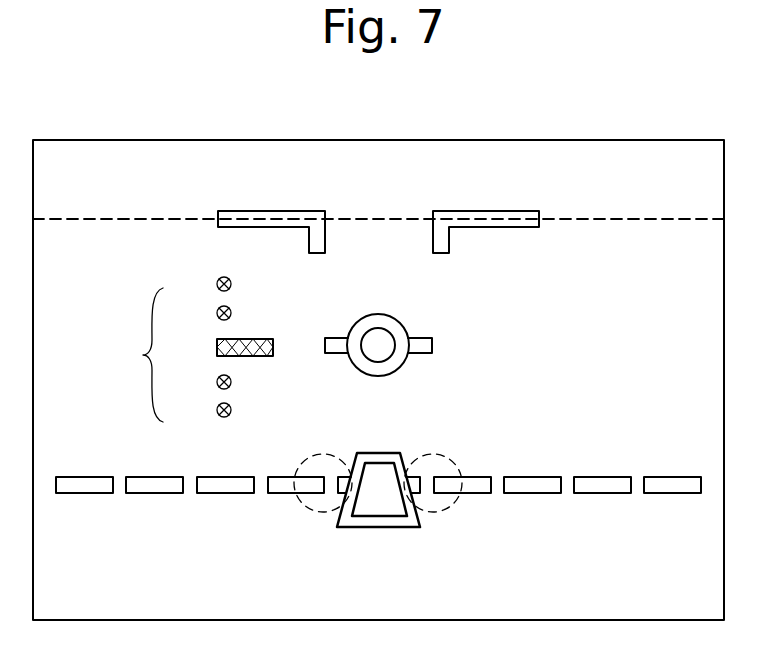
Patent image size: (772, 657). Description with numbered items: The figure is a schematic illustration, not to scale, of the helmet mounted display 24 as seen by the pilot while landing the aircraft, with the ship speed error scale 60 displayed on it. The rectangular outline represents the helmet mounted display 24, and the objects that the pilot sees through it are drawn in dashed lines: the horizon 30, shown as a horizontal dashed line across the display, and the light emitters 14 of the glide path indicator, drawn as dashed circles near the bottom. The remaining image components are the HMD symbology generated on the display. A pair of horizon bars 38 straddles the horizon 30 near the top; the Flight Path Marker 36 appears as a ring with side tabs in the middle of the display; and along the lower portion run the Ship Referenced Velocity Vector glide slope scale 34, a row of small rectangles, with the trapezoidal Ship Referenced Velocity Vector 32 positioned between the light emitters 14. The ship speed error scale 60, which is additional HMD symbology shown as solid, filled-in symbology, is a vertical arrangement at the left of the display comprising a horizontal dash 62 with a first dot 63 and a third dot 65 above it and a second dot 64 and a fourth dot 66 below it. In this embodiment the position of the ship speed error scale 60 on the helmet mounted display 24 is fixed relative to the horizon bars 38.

The helmet mounted display 24 is at (640, 140).
The horizon 30 is at (643, 219).
The horizon bars 38 is at (258, 211).
The ship speed error scale 60 is at (135, 355).
The third dot 65 is at (226, 277).
The first dot 63 is at (230, 310).
The horizontal dash 62 is at (268, 338).
The second dot 64 is at (231, 381).
The fourth dot 66 is at (228, 417).
The Flight Path Marker 36 is at (432, 346).
The Ship Referenced Velocity Vector glide slope scale 34 is at (213, 495).
The light emitters 14 is at (304, 504).
The Ship Referenced Velocity Vector 32 is at (380, 527).